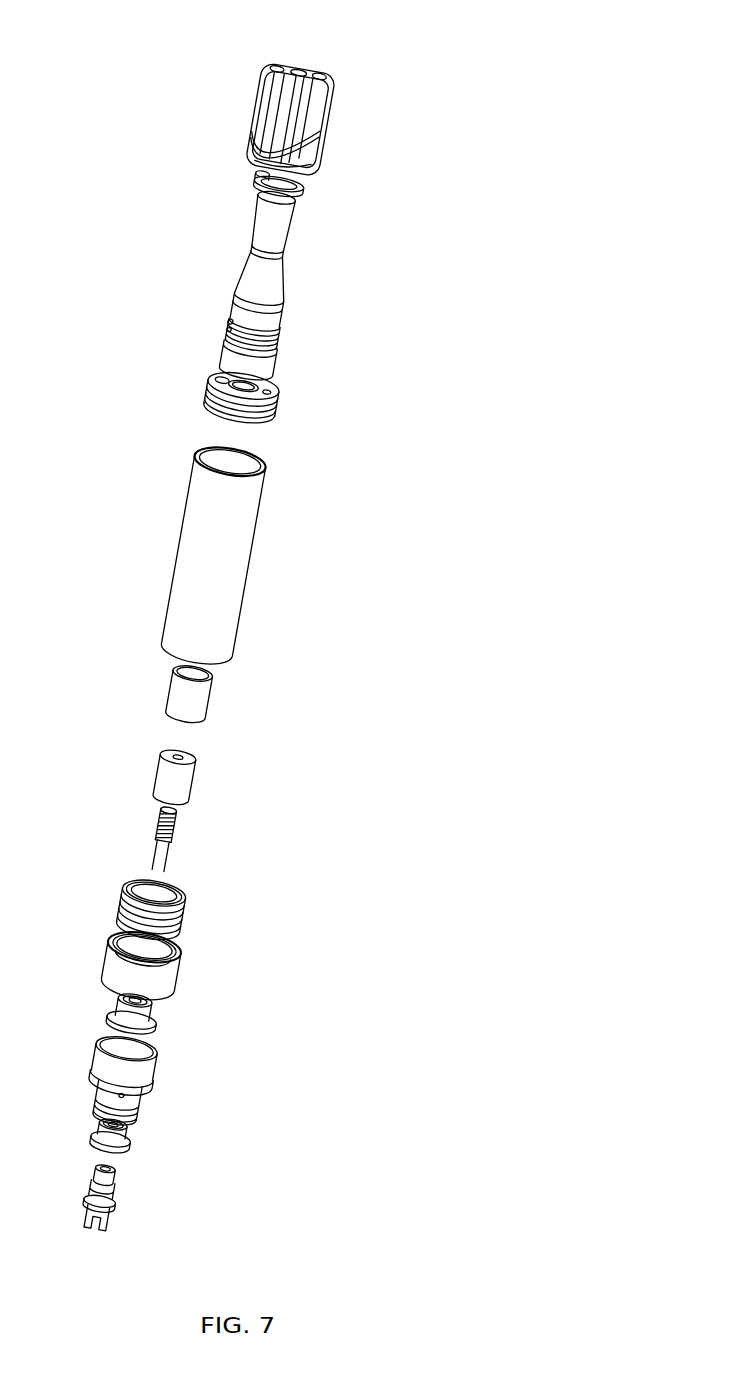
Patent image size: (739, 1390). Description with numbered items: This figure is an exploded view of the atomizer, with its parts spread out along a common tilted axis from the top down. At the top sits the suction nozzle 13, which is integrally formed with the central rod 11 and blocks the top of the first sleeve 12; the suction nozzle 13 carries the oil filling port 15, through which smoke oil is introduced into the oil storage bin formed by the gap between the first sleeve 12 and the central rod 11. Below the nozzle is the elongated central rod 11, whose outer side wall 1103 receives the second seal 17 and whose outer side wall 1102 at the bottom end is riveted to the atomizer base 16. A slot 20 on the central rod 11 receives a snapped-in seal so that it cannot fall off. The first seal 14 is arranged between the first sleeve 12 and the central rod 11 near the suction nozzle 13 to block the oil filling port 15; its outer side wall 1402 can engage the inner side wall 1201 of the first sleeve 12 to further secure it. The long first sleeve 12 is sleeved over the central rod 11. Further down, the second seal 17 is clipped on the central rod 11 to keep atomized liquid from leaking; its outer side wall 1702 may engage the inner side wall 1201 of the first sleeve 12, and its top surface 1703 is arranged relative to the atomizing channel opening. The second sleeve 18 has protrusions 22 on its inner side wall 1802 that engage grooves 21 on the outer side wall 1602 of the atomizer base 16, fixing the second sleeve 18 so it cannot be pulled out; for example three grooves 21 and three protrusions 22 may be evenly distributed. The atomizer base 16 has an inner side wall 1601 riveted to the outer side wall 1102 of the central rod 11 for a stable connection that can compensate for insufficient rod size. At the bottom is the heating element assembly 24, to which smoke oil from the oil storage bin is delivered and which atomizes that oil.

The central rod 11 is at (272, 287).
The outer side wall of the bottom end of the central rod 1102 is at (263, 360).
The outer side wall of the central rod 1103 is at (280, 332).
The first sleeve 12 is at (257, 550).
The inner side wall of the first sleeve 1201 is at (247, 466).
The suction nozzle 13 is at (320, 88).
The first seal 14 is at (290, 407).
The outer side wall of the first seal 1402 is at (273, 413).
The oil filling port 15 is at (315, 70).
The atomizer base 16 is at (142, 1057).
The inner side wall of the atomizer base 1601 is at (137, 1052).
The outer side wall of the atomizer base 1602 is at (108, 1065).
The second seal 17 is at (210, 877).
The outer side wall of the second seal 1702 is at (190, 900).
The top surface of the second seal 1703 is at (172, 887).
The second sleeve 18 is at (163, 943).
The inner side wall of the second sleeve 1802 is at (140, 942).
The slot 20 is at (228, 334).
The groove 21 is at (150, 1085).
The protrusion 22 is at (177, 942).
The heating element assembly 24 is at (120, 1200).